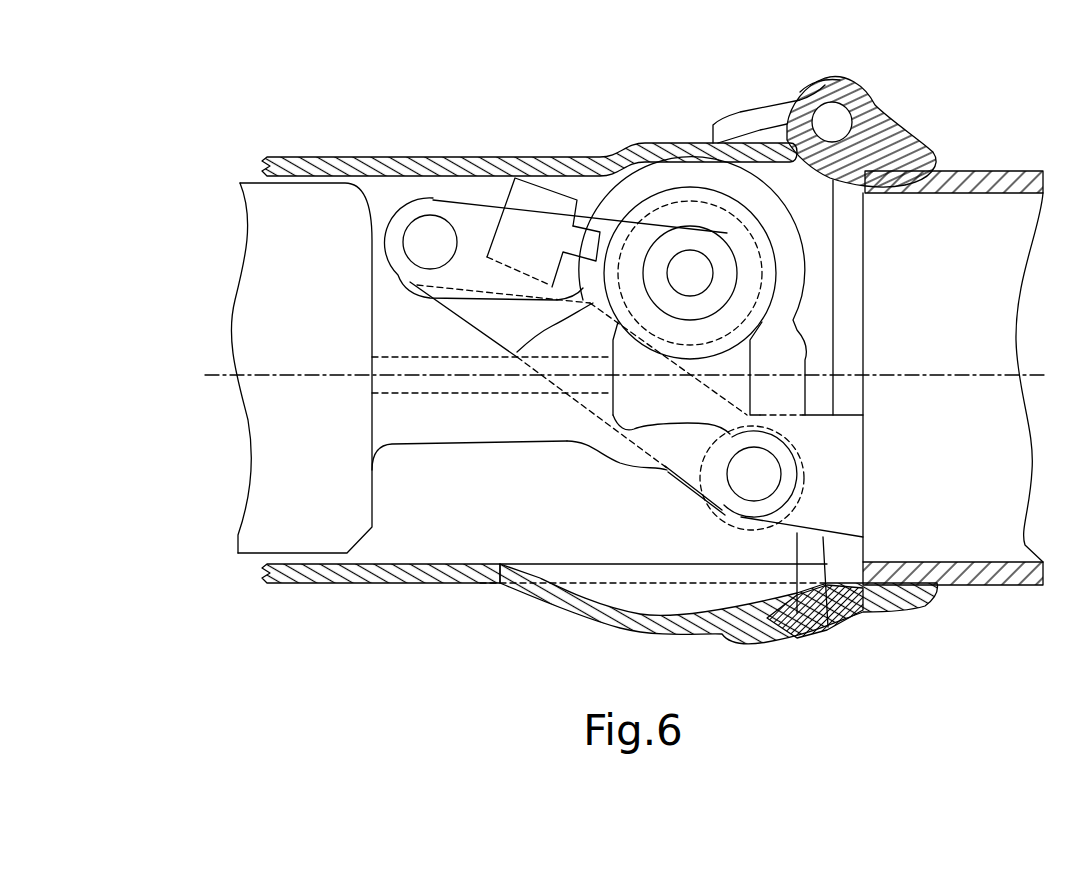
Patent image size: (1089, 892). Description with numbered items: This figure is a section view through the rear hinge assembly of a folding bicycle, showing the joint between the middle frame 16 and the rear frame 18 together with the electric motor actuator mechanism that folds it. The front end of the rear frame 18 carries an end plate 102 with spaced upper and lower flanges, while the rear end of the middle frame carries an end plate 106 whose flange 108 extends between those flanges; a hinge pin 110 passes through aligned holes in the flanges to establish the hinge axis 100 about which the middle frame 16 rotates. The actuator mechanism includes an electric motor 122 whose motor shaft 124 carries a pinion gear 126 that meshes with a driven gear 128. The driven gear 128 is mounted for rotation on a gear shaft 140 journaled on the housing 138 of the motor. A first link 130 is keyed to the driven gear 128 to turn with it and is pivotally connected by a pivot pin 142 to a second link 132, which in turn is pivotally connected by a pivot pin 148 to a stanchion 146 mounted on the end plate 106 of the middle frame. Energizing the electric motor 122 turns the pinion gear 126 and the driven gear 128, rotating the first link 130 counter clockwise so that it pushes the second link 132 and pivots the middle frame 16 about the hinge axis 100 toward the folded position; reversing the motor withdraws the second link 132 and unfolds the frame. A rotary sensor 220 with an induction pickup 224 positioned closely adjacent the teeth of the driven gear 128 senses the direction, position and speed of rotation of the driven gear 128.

The middle frame 16 is at (1010, 177).
The rear frame 18 is at (328, 163).
The hinge axis 100 is at (832, 120).
The end plate 102 is at (817, 230).
The end plate 106 is at (850, 280).
The flange 108 is at (830, 92).
The hinge pin 110 is at (838, 127).
The electric motor 122 is at (272, 293).
The motor shaft 124 is at (488, 383).
The pinion gear 126 is at (633, 402).
The driven gear 128 is at (700, 213).
The first link 130 is at (650, 247).
The second link 132 is at (502, 317).
The housing 138 is at (733, 183).
The gear shaft 140 is at (700, 267).
The pivot pin 142 is at (433, 232).
The stanchion 146 is at (838, 508).
The pivot pin 148 is at (747, 485).
The rotary sensor 220 is at (542, 203).
The induction pickup 224 is at (597, 248).